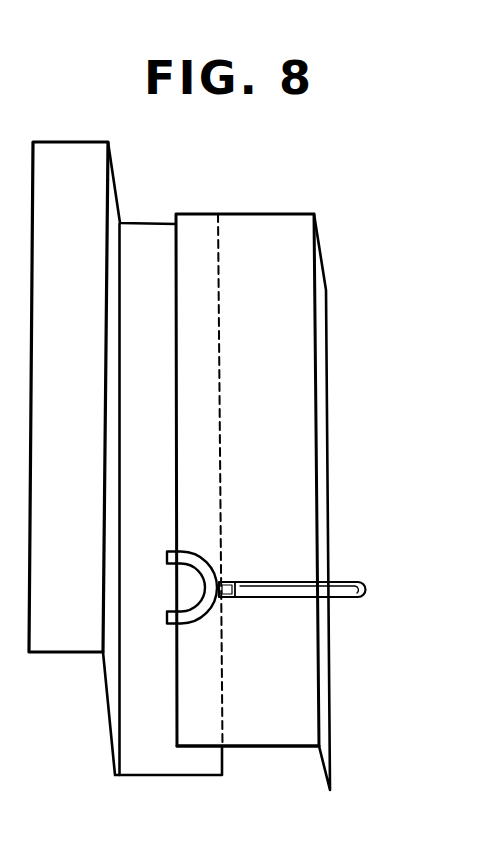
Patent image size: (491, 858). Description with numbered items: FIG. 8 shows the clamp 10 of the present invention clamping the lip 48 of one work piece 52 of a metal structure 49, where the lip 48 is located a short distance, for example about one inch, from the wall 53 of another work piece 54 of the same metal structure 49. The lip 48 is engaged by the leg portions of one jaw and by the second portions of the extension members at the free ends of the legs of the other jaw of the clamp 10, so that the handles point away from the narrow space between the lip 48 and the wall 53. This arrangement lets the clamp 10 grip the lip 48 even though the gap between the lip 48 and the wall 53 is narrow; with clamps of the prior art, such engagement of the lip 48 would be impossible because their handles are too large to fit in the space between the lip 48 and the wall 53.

The clamp 10 is at (243, 573).
The lip 48 is at (192, 268).
The metal structure 49 is at (332, 290).
The work piece 52 is at (267, 727).
The wall 53 is at (118, 718).
The work piece 54 is at (68, 654).